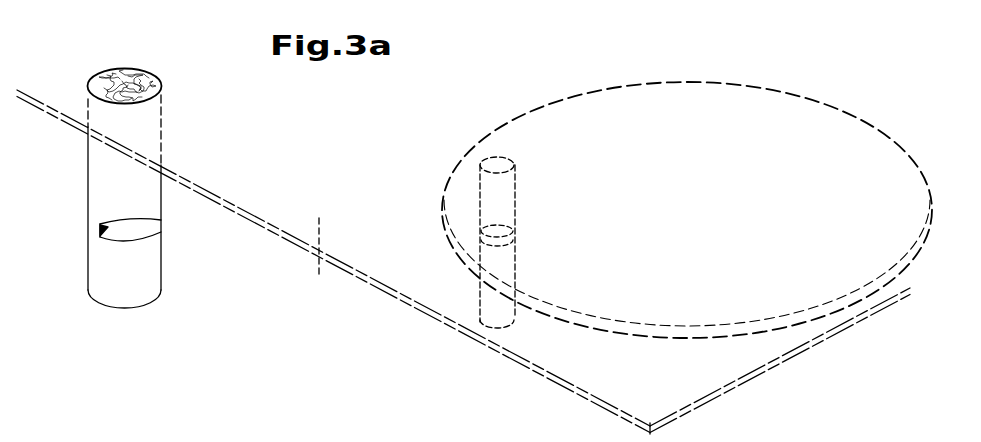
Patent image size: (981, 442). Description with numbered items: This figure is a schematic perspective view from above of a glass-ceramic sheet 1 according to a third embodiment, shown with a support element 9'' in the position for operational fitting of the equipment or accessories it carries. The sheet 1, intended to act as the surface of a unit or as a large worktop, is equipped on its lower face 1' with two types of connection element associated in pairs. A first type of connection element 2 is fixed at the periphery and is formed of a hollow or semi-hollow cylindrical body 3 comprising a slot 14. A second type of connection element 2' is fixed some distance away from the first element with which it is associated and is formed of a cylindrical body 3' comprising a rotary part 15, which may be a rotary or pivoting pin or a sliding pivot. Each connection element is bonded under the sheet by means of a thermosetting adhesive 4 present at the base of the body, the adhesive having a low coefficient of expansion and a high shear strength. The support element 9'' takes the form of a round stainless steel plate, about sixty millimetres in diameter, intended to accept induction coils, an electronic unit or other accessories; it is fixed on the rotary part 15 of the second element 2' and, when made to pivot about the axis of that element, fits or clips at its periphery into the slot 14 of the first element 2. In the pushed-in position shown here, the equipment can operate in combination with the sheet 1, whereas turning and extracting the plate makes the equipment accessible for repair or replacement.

The glass-ceramic sheet 1 is at (463, 262).
The lower face 1' is at (288, 268).
The first type of connection element 2 is at (90, 187).
The cylindrical body 3 is at (92, 201).
The thermosetting adhesive 4 is at (108, 80).
The slot 14 is at (128, 236).
The second type of connection element 2' is at (494, 290).
The cylindrical body 3' is at (495, 290).
The rotary part 15 is at (539, 246).
The support element 9'' is at (687, 250).